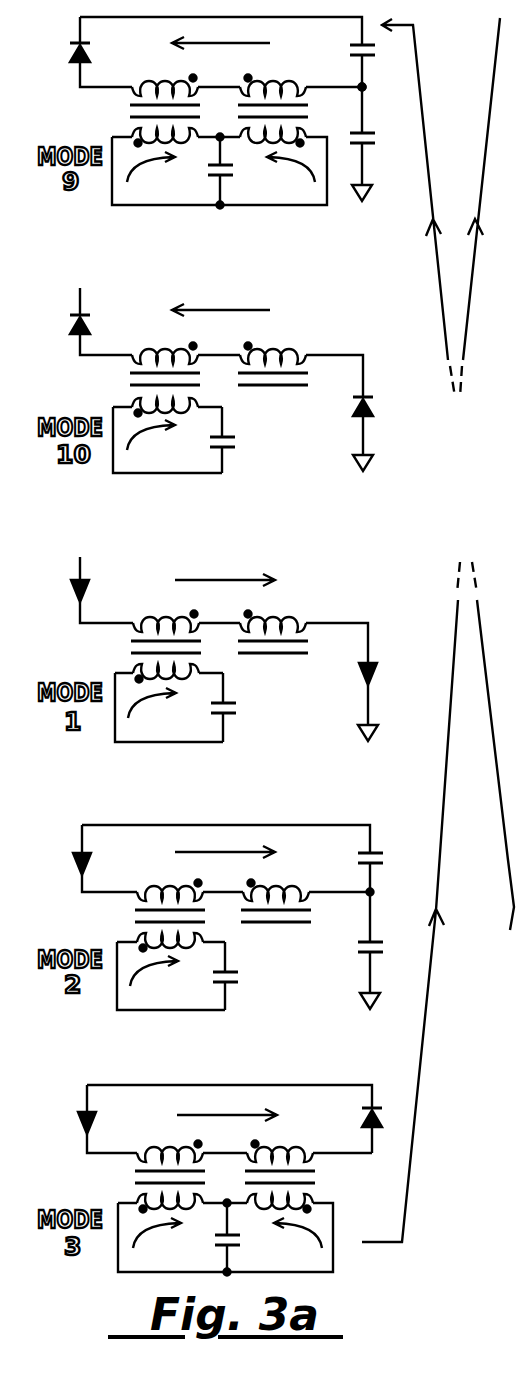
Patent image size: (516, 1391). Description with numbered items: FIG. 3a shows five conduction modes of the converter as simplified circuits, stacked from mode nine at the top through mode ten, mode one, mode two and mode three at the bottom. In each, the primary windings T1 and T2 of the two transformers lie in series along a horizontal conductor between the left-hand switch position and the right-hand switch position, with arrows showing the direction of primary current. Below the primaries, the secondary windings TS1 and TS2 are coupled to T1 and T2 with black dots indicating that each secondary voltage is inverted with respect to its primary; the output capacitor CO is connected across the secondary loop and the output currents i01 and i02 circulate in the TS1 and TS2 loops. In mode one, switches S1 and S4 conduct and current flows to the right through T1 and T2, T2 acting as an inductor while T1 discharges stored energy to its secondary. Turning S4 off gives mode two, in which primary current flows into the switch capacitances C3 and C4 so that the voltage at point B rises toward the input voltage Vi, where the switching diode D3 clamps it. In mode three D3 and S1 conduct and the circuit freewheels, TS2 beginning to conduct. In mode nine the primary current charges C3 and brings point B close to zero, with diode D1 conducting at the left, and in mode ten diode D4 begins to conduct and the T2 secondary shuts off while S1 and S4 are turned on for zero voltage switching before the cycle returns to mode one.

The diode D1 is at (65, 194).
The switching diode D3 is at (386, 1105).
The diode D4 is at (383, 410).
The switch S1 is at (72, 861).
The switch S4 is at (382, 679).
The primary winding T1 is at (167, 619).
The primary winding T2 is at (276, 619).
The secondary winding TS1 is at (144, 124).
The secondary winding TS2 is at (298, 124).
The switch capacitance C3 is at (382, 461).
The switch capacitance C4 is at (382, 548).
The output capacitor CO is at (242, 704).
The point B is at (378, 496).
The output current i01 is at (153, 710).
The output current i02 is at (295, 710).
The input voltage Vi is at (74, 409).